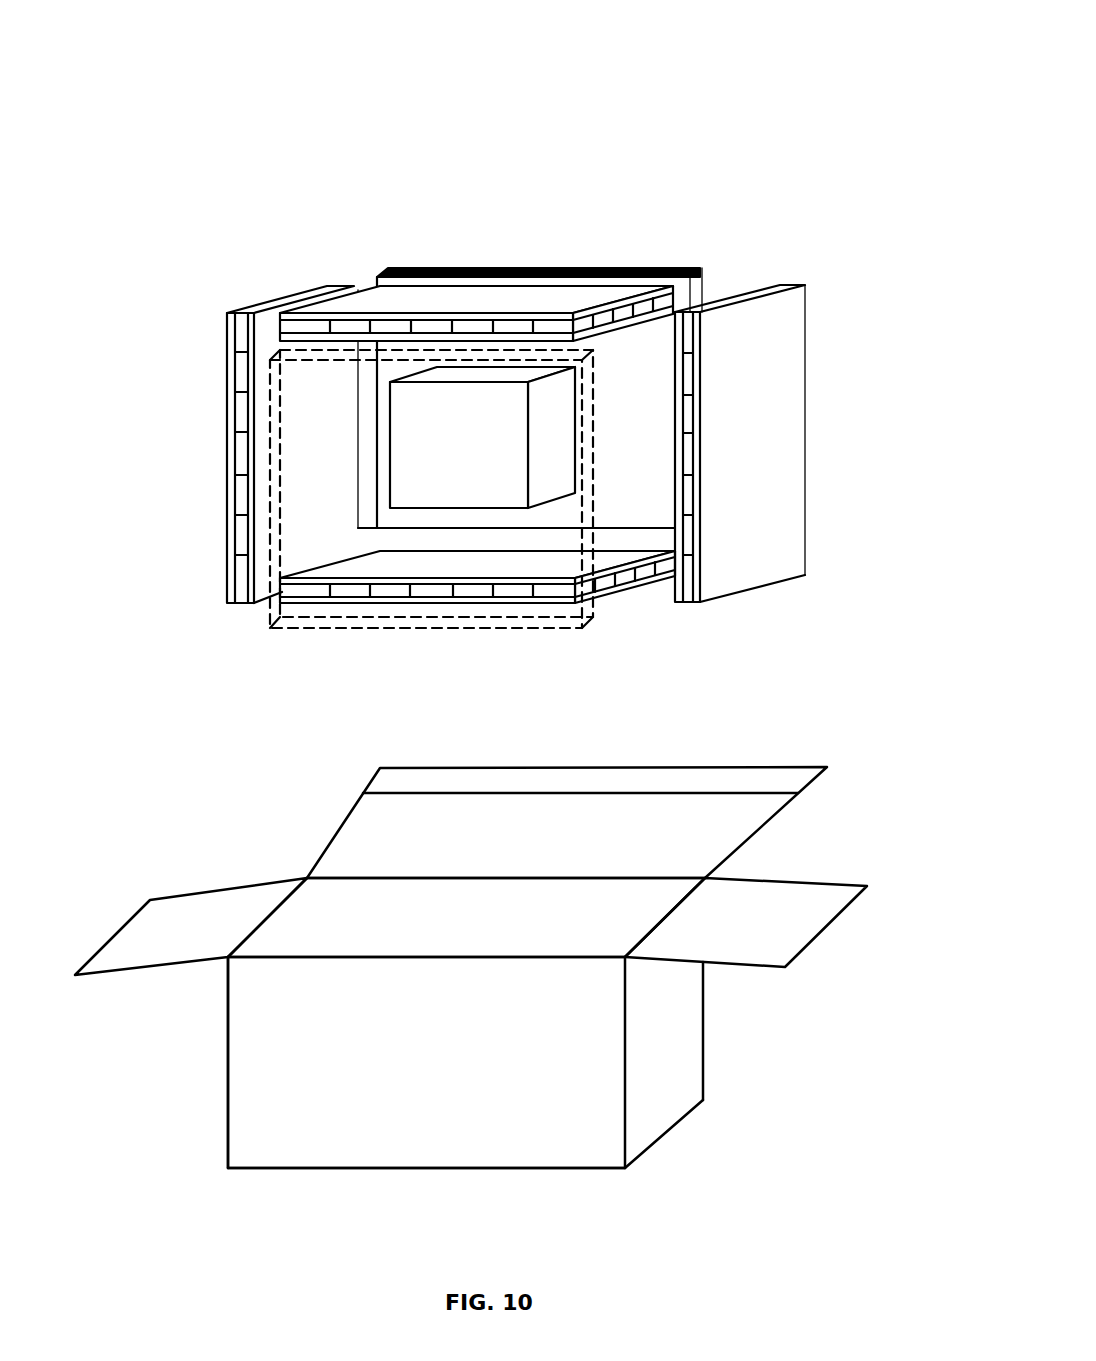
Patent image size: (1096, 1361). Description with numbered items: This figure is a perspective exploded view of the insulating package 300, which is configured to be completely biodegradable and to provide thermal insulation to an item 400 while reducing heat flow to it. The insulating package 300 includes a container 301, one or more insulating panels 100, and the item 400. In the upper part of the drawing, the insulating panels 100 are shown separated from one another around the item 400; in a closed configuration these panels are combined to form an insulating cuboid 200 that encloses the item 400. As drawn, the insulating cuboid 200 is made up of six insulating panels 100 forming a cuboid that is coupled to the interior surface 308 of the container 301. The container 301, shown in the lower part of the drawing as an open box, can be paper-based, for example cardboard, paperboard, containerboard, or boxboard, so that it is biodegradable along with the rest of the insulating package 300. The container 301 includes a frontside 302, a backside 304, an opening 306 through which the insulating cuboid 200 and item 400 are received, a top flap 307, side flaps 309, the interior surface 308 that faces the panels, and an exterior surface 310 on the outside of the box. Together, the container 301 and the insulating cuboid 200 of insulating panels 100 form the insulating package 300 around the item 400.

The insulating package 300 is at (837, 71).
The insulating cuboid 200 is at (512, 428).
The insulating panel 100 is at (725, 632).
The item 400 is at (448, 437).
The frontside 302 is at (742, 745).
The container 301 is at (288, 1147).
The backside 304 is at (575, 1194).
The opening 306 is at (476, 936).
The top flap 307 is at (793, 820).
The interior surface 308 is at (337, 945).
The side flaps 309 is at (138, 937).
The exterior surface 310 is at (253, 1022).